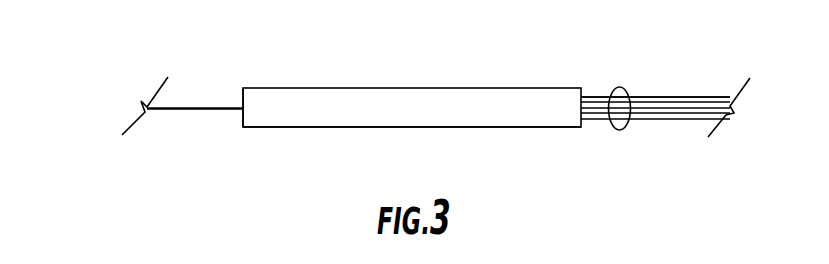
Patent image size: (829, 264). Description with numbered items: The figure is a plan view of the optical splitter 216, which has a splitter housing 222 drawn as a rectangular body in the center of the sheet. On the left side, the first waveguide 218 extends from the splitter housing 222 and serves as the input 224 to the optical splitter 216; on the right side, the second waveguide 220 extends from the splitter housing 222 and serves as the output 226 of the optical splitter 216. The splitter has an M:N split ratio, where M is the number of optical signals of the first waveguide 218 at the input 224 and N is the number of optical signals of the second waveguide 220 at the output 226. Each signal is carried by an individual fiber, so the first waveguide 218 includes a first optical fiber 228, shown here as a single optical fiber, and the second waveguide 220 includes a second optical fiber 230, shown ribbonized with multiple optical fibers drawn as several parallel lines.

The optical splitter 216 is at (465, 87).
The first waveguide 218 is at (213, 109).
The second waveguide 220 is at (620, 87).
The splitter housing 222 is at (355, 128).
The input 224 is at (243, 95).
The output 226 is at (582, 128).
The first optical fiber 228 is at (185, 108).
The second optical fiber 230 is at (675, 98).